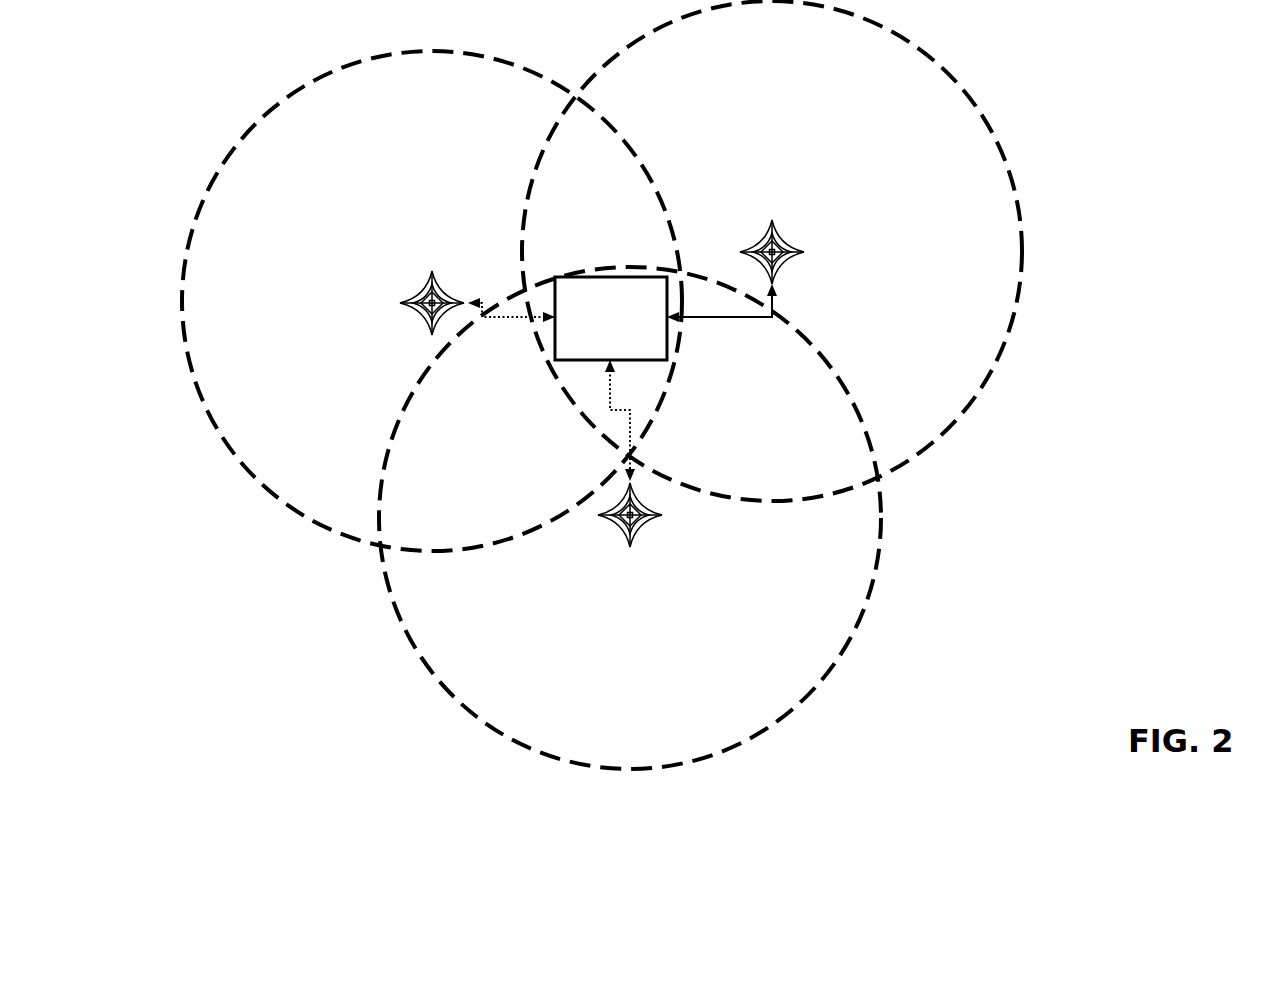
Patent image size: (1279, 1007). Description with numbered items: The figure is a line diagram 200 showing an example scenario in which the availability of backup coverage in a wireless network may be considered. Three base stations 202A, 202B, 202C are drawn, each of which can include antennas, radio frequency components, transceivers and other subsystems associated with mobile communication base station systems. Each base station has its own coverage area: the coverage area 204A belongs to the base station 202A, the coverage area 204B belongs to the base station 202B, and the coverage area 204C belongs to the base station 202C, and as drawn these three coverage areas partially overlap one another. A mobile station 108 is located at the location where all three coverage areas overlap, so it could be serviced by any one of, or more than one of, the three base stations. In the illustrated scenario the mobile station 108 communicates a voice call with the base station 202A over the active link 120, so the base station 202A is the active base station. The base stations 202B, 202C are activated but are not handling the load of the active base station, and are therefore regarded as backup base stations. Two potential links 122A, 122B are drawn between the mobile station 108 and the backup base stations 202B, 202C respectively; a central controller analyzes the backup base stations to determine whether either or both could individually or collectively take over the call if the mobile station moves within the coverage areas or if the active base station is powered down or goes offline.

The wireless communication environment 200 is at (1133, 57).
The coverage area 204A is at (989, 378).
The coverage area 204B is at (847, 640).
The coverage area 204C is at (248, 136).
The active base station 202A is at (792, 240).
The backup base station 202B is at (638, 538).
The backup base station 202C is at (418, 316).
The mobile station 108 is at (611, 318).
The active link 120 is at (735, 319).
The potential link 122A is at (611, 375).
The potential link 122B is at (488, 322).